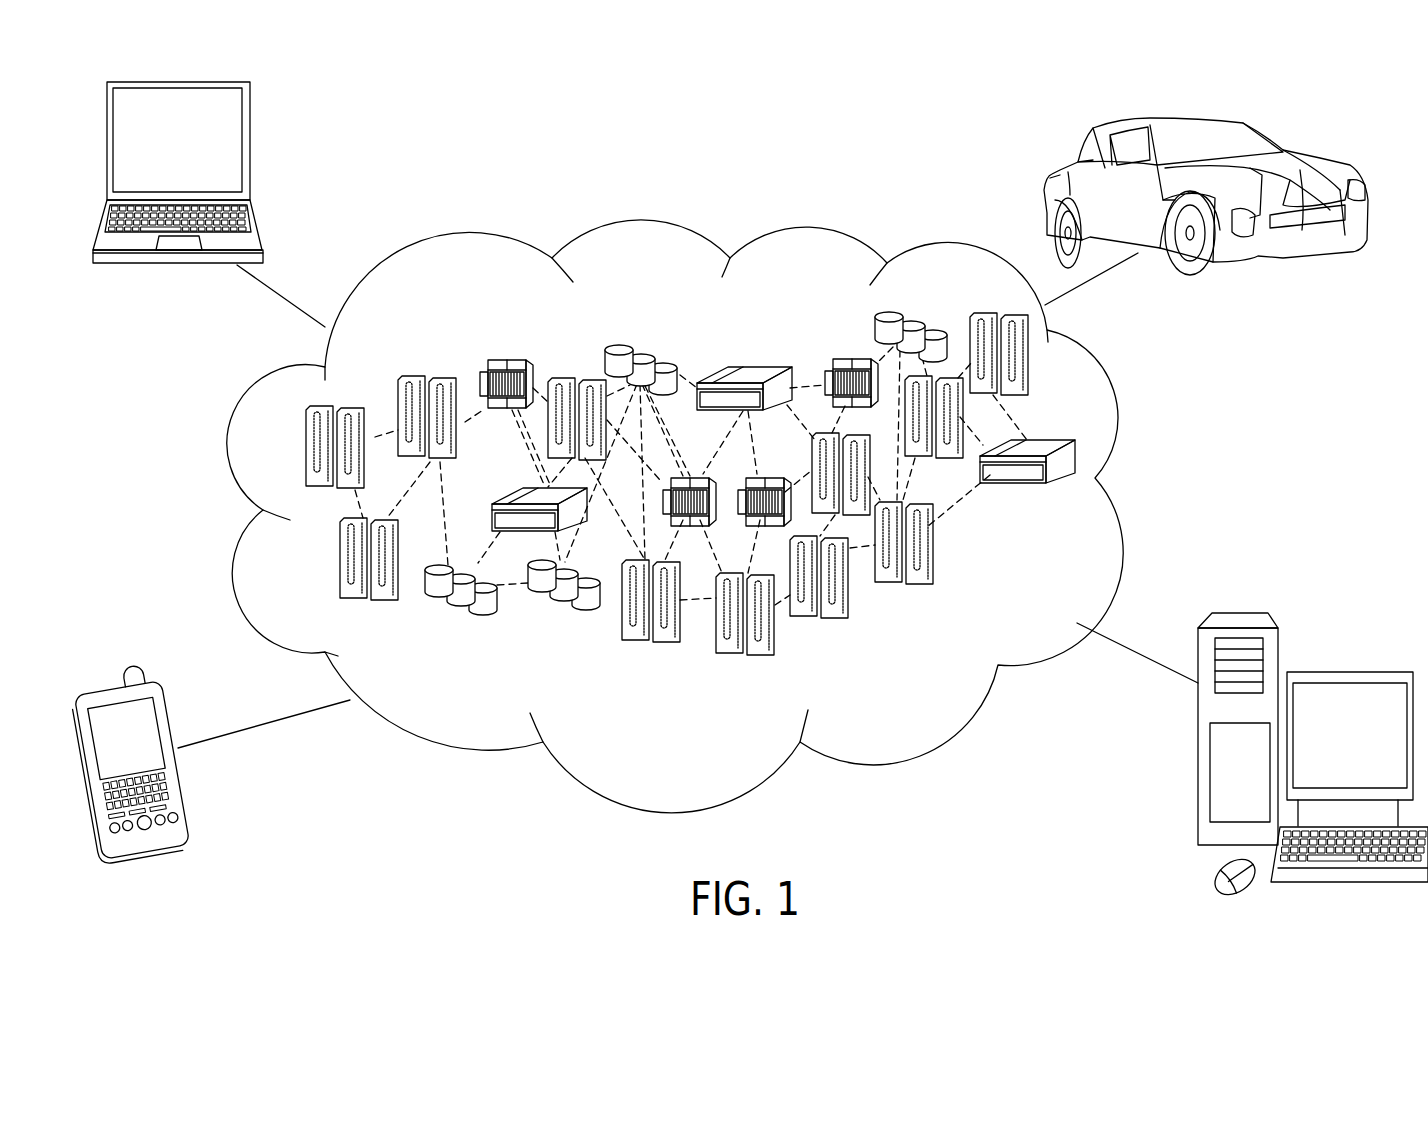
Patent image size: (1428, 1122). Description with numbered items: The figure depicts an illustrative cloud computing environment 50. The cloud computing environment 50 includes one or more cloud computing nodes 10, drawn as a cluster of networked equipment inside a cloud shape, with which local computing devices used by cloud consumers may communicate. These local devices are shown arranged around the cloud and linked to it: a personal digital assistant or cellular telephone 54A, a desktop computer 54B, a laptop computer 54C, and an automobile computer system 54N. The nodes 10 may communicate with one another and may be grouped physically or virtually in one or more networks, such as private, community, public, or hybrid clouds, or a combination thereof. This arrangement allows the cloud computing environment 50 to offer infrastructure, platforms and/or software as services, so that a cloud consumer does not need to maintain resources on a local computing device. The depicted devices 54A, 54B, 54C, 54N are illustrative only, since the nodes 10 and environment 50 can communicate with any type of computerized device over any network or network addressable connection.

The cloud computing nodes 10 is at (1113, 504).
The cloud computing environment 50 is at (1135, 415).
The personal digital assistant (PDA) or cellular telephone 54A is at (183, 785).
The desktop computer 54B is at (1352, 672).
The laptop computer 54C is at (250, 140).
The automobile computer system 54N is at (1050, 190).